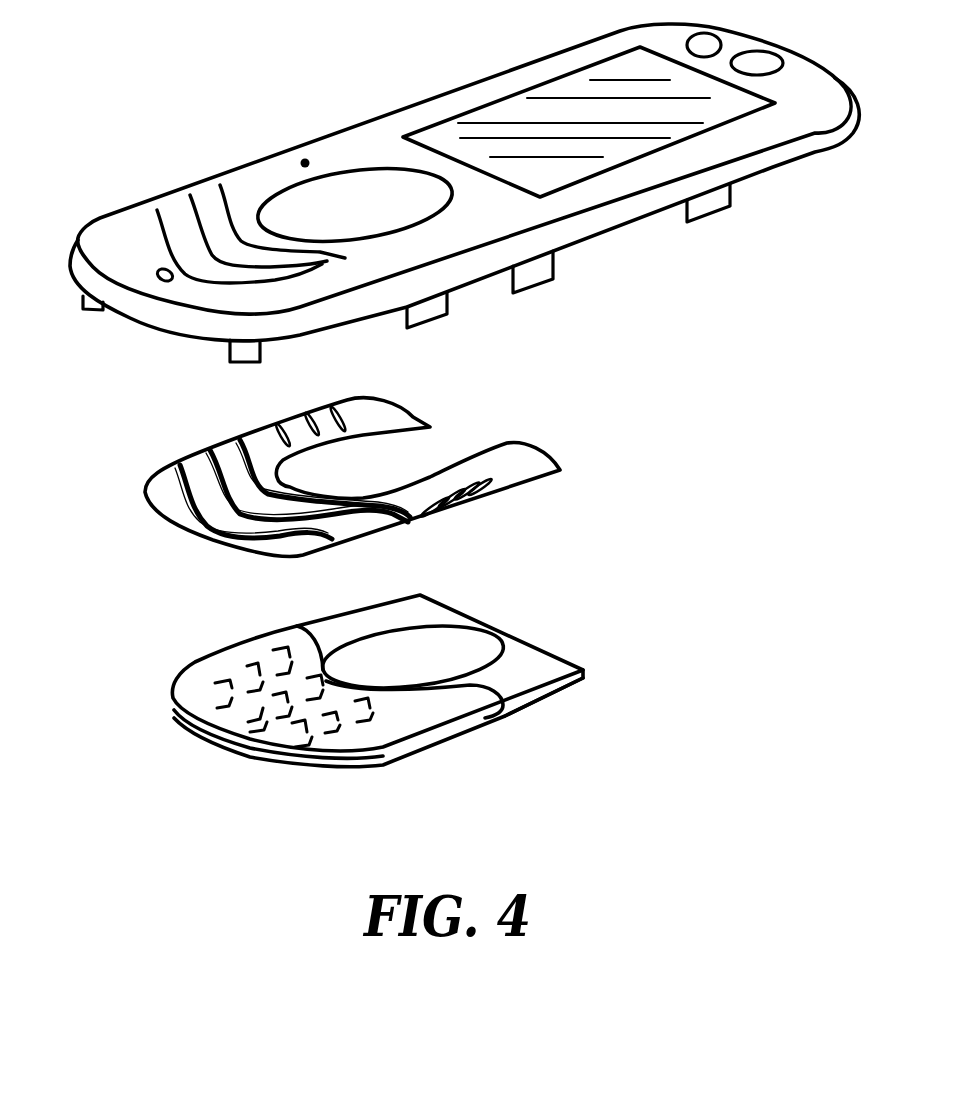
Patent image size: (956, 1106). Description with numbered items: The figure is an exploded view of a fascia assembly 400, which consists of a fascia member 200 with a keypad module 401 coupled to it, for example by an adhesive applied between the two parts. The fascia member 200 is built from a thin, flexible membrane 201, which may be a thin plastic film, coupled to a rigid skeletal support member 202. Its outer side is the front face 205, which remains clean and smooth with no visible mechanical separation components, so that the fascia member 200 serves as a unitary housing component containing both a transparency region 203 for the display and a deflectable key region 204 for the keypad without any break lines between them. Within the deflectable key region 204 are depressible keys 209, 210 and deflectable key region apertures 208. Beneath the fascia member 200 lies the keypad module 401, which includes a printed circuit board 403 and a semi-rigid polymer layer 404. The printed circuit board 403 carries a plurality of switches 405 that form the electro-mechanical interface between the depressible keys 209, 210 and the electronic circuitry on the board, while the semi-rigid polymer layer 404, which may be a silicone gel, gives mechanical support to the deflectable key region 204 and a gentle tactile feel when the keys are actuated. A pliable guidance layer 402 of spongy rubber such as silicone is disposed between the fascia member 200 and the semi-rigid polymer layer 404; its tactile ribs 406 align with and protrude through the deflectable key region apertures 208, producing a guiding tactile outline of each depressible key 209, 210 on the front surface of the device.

The fascia member 200 is at (109, 400).
The thin, flexible membrane 201 is at (733, 137).
The rigid skeletal support member 202 is at (630, 207).
The transparency region 203 is at (501, 112).
The deflectable key region 204 is at (227, 182).
The front face 205 is at (367, 142).
The deflectable key region apertures 208 is at (248, 266).
The depressible key 209 is at (320, 277).
The depressible key 210 is at (350, 265).
The fascia assembly 400 is at (732, 501).
The keypad module 401 is at (177, 526).
The pliable guidance layer 402 is at (400, 418).
The printed circuit board 403 is at (527, 670).
The semi-rigid polymer layer 404 is at (428, 712).
The switches 405 is at (327, 727).
The tactile ribs 406 is at (413, 517).